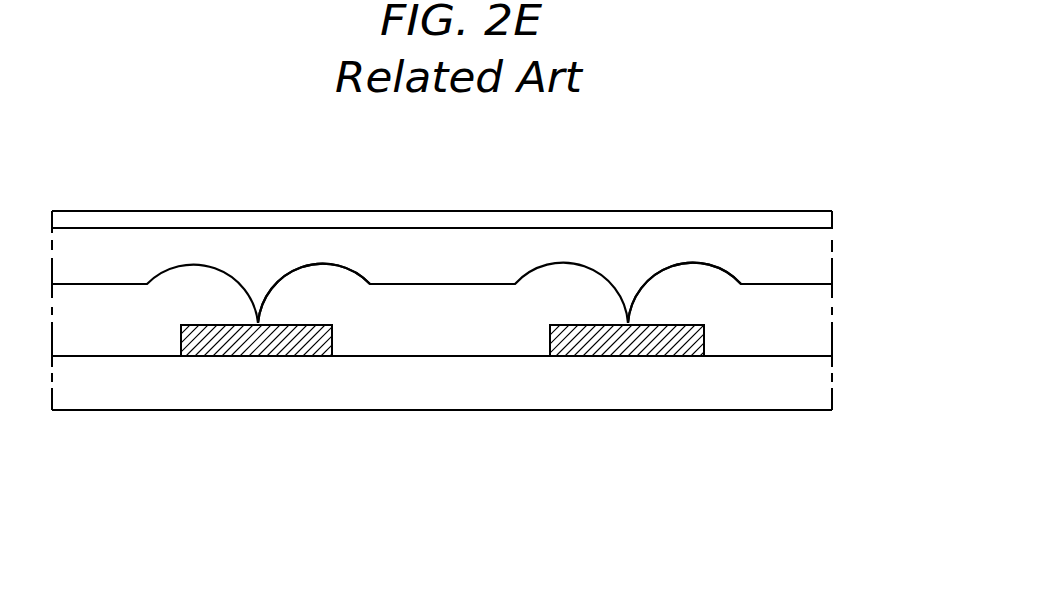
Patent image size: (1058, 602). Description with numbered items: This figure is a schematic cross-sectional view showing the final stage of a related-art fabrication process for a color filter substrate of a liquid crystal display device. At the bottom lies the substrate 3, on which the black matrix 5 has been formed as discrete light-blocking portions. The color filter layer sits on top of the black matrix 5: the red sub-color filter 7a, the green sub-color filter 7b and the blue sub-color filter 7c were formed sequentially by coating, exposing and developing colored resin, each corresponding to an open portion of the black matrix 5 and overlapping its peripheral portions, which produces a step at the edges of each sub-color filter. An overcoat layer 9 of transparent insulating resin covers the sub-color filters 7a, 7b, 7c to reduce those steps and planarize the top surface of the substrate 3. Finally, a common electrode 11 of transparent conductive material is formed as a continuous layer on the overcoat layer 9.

The substrate 3 is at (722, 398).
The black matrix 5 is at (270, 340).
The red sub-color filter 7a is at (110, 298).
The green sub-color filter 7b is at (295, 287).
The blue sub-color filter 7c is at (690, 280).
The overcoat layer 9 is at (818, 263).
The common electrode 11 is at (777, 217).